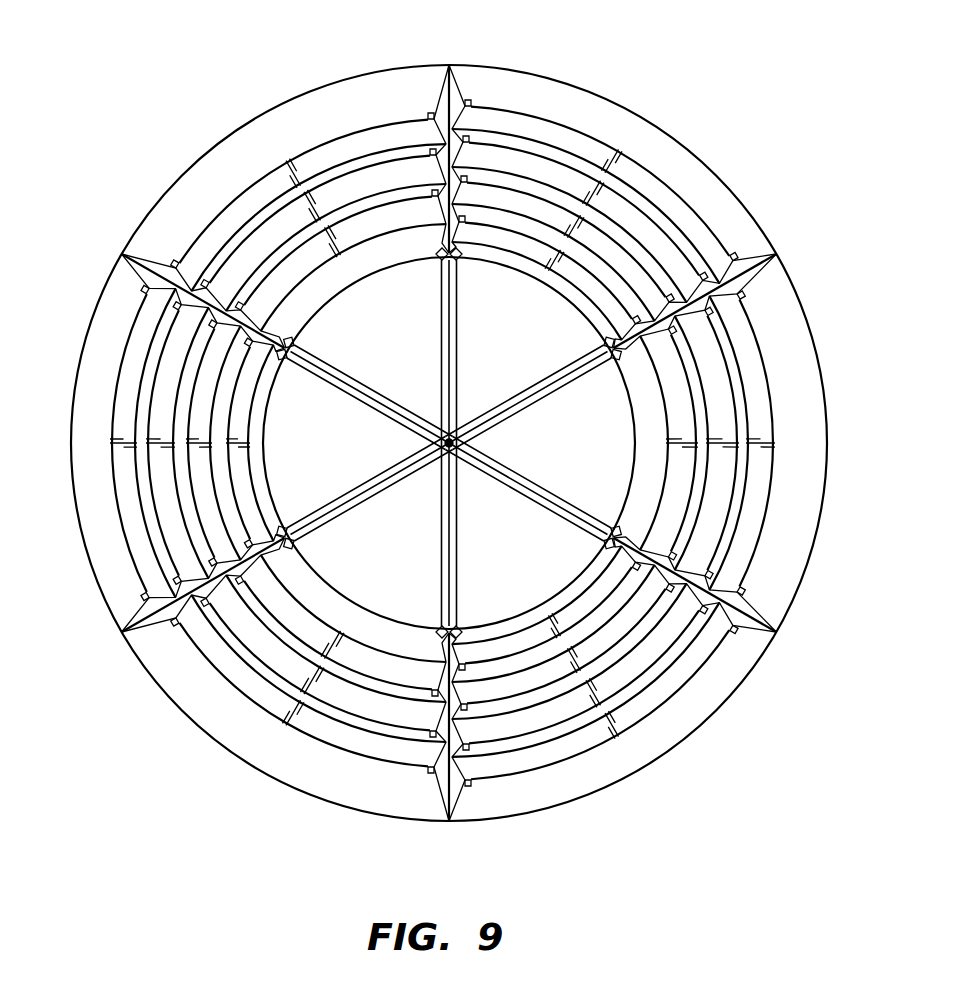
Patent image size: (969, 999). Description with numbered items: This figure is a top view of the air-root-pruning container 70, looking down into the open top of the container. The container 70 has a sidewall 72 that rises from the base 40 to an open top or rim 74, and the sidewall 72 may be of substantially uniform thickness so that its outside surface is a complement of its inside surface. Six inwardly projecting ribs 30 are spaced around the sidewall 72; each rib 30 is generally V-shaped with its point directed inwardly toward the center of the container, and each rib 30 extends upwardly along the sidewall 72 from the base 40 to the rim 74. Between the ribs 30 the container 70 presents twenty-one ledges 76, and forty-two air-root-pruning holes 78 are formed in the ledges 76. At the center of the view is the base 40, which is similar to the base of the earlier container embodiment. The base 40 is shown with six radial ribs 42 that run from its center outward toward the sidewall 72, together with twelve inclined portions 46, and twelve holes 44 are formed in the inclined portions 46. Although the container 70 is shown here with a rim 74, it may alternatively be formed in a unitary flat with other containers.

The inwardly projecting rib 30 is at (464, 80).
The base 40 is at (483, 553).
The radial rib 42 is at (541, 398).
The hole 44 is at (296, 346).
The inclined portion 46 is at (459, 259).
The air-root-pruning container 70 is at (445, 438).
The sidewall 72 is at (540, 93).
The rim 74 is at (708, 163).
The ledge 76 is at (313, 250).
The air-root-pruning hole 78 is at (432, 190).